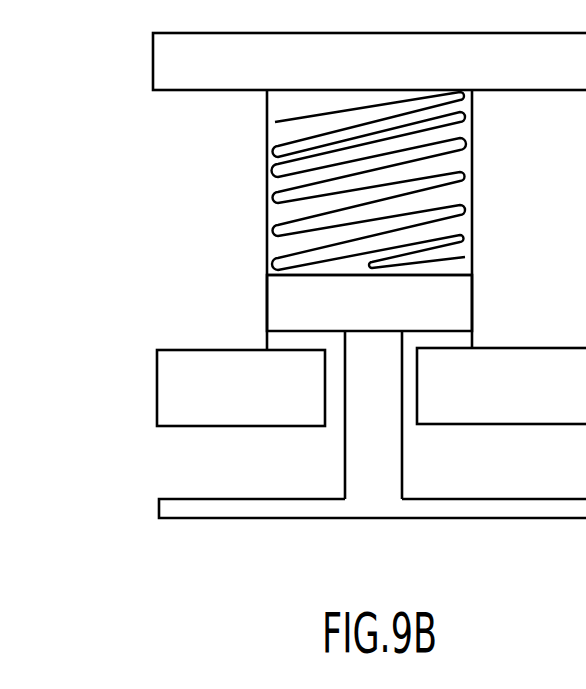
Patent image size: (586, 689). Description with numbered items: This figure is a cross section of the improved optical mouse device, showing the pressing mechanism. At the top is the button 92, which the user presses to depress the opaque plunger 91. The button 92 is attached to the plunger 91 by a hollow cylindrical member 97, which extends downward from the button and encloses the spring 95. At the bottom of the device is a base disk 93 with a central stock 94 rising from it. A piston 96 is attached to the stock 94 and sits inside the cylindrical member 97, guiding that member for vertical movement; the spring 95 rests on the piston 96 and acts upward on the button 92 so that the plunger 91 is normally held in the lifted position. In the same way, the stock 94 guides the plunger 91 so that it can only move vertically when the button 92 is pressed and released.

The opaque plunger 91 is at (170, 350).
The button 92 is at (153, 58).
The base disk 93 is at (158, 512).
The central stock 94 is at (345, 468).
The spring 95 is at (462, 174).
The piston 96 is at (455, 303).
The hollow cylindrical member 97 is at (267, 195).